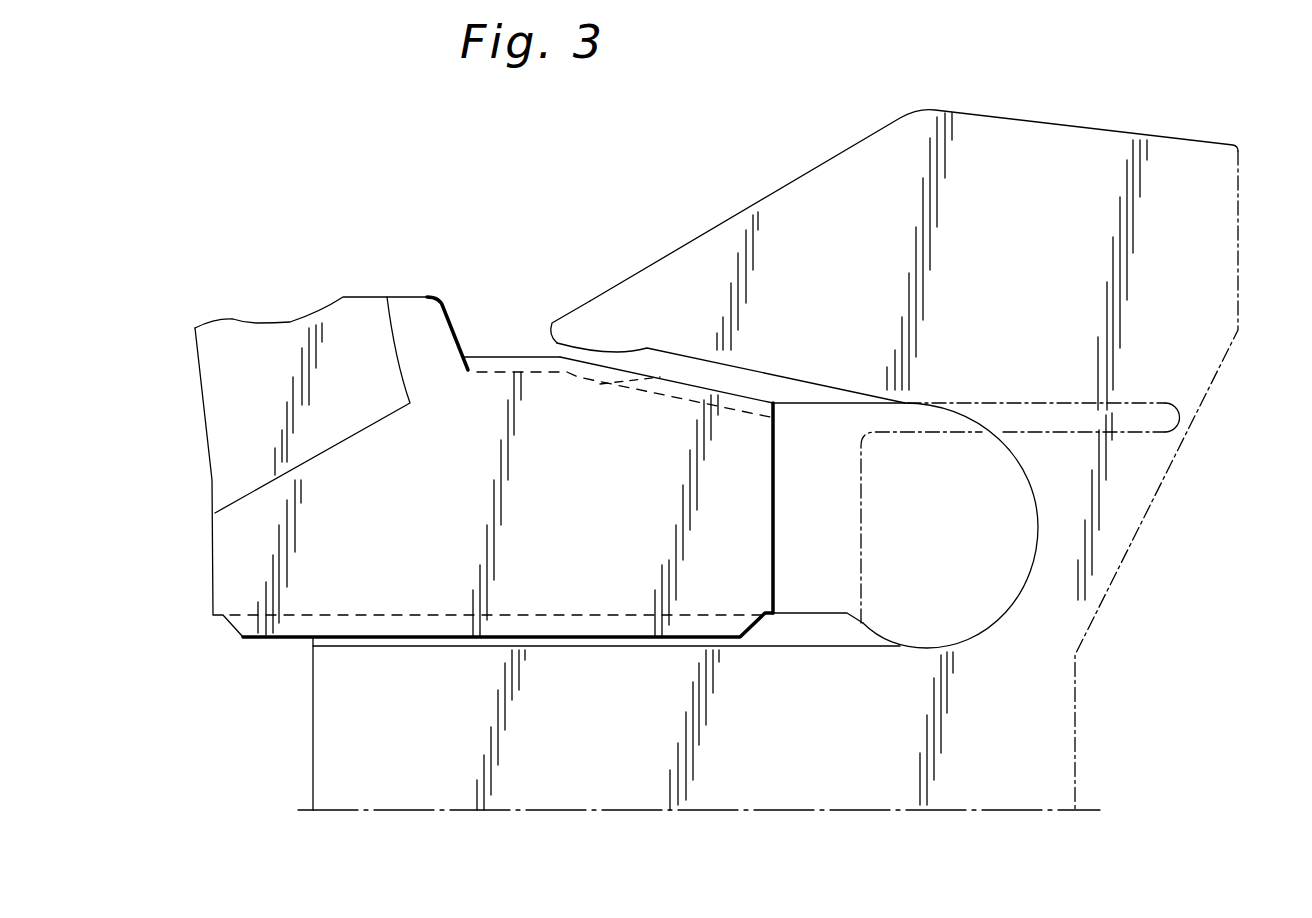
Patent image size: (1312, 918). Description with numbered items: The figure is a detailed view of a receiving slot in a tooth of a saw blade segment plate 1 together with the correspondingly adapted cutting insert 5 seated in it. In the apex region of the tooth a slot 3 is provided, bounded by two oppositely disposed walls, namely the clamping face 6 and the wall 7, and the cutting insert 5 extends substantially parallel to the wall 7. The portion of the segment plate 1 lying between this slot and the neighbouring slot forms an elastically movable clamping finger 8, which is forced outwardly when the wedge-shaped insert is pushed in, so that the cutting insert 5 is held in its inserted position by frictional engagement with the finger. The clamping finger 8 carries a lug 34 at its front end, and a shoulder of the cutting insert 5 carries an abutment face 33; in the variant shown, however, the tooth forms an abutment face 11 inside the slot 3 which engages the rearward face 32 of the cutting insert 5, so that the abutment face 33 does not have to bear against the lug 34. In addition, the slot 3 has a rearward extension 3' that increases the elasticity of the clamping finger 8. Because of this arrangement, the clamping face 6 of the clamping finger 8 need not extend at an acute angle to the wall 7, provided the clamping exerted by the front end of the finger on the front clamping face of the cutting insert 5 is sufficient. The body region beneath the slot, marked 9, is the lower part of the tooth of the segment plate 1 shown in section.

The segment plate 1 is at (712, 487).
The slot 3 is at (818, 727).
The rearward extension 3' is at (1101, 410).
The cutting insert 5 is at (228, 573).
The clamping face 6 is at (742, 397).
The wall 7 is at (835, 612).
The clamping finger 8 is at (820, 198).
The base body 9 is at (337, 778).
The abutment face 11 is at (865, 475).
The rearward face 32 is at (773, 520).
The abutment face 33 is at (452, 313).
The lug 34 is at (557, 343).